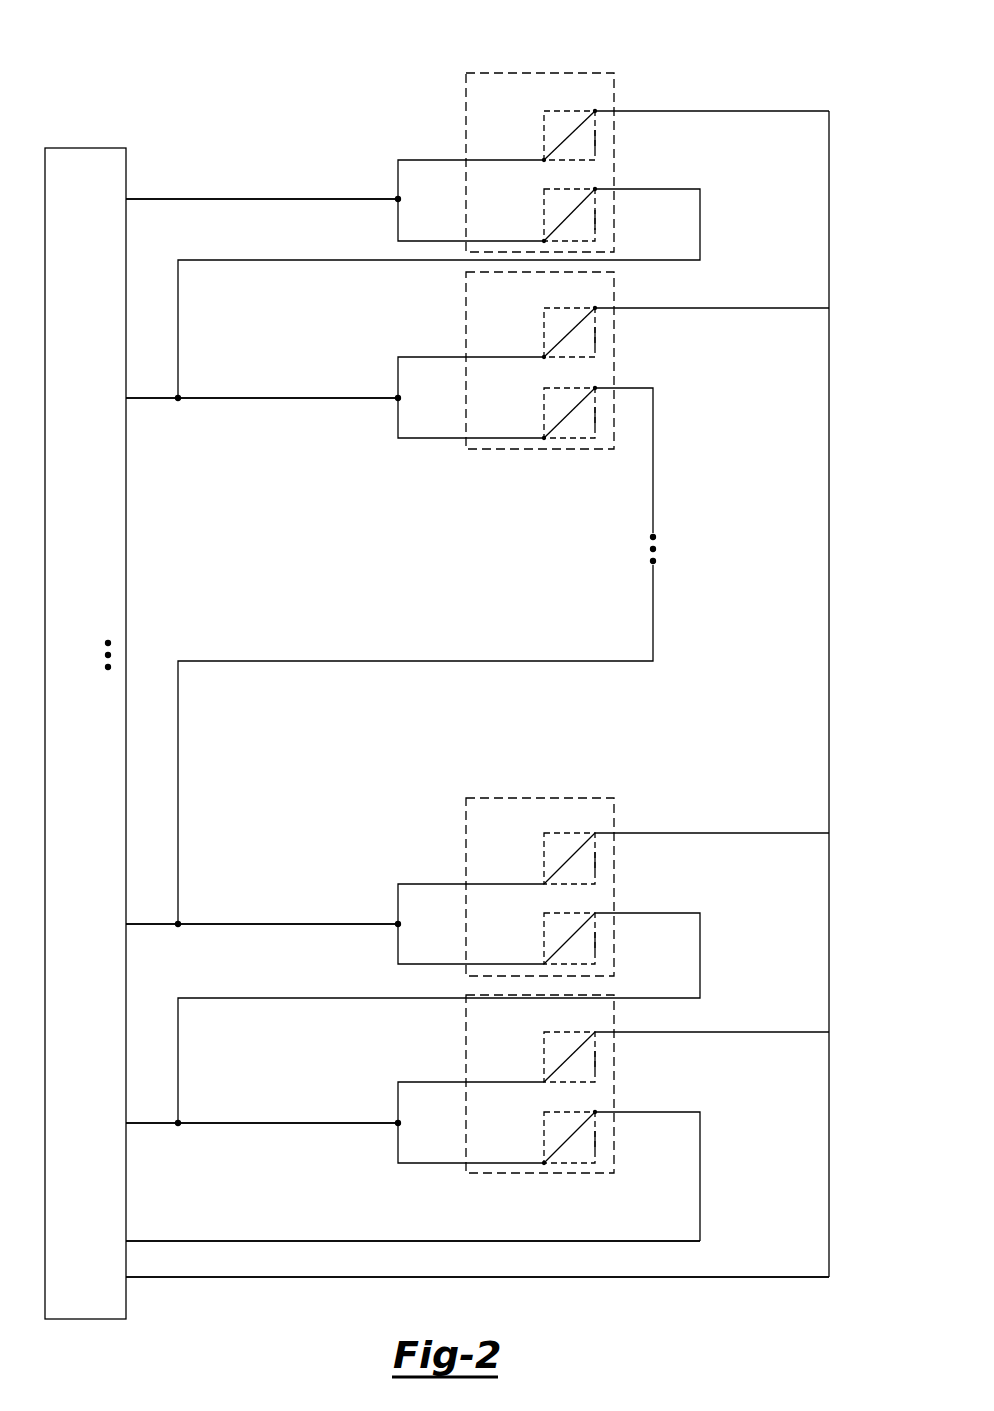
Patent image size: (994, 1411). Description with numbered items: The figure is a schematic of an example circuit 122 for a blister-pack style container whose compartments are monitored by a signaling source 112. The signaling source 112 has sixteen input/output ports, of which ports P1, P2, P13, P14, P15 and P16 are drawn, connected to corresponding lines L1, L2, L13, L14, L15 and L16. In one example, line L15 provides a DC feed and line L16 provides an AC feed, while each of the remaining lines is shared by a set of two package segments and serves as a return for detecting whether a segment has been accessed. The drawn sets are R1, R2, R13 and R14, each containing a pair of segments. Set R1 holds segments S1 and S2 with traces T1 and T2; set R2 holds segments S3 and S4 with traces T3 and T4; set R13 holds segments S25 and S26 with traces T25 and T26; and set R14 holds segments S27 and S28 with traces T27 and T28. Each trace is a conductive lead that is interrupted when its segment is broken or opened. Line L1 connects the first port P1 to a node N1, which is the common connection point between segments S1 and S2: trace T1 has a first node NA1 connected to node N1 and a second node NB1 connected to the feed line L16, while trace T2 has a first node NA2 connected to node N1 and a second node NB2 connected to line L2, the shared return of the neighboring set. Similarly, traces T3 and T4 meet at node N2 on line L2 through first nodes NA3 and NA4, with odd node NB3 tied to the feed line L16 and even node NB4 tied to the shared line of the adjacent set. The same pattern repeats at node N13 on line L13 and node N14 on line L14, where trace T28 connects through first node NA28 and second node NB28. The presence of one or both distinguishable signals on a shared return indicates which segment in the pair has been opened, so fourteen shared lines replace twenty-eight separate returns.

The signaling source 112 is at (85, 148).
The circuit 122 is at (752, 50).
The first port P1 is at (244, 202).
The port P2 is at (244, 401).
The port P13 is at (242, 927).
The port P14 is at (242, 1126).
The port P15 is at (393, 1244).
The port P16 is at (457, 1280).
The line L1 is at (244, 199).
The line L2 is at (244, 398).
The line L13 is at (244, 924).
The line L14 is at (244, 1123).
The line L15 is at (323, 1241).
The feed line L16 is at (243, 1279).
The node N1 is at (398, 199).
The node N2 is at (398, 398).
The node N13 is at (398, 924).
The node N14 is at (398, 1123).
The set of two package segments R1 is at (510, 73).
The set of two package segments R2 is at (510, 449).
The set of two package segments R13 is at (510, 798).
The set of two package segments R14 is at (510, 1173).
The trace T1 is at (570, 135).
The trace T2 is at (570, 214).
The trace T3 is at (570, 332).
The trace T4 is at (570, 413).
The trace T25 is at (570, 858).
The trace T26 is at (570, 938).
The trace T27 is at (570, 1057).
The trace T28 is at (570, 1137).
The first node NA1 is at (544, 160).
The first node NA2 is at (544, 241).
The first node NA3 is at (544, 357).
The first node NA4 is at (544, 438).
The first node NA28 is at (544, 1163).
The second node NB1 is at (597, 110).
The second node NB2 is at (597, 188).
The second node NB3 is at (597, 307).
The second node NB4 is at (597, 387).
The second node NB28 is at (597, 1111).
The segment S1 is at (596, 139).
The segment S2 is at (596, 218).
The segment S3 is at (596, 338).
The segment S4 is at (596, 417).
The segment S25 is at (596, 862).
The segment S26 is at (596, 942).
The segment S27 is at (596, 1061).
The segment S28 is at (596, 1141).